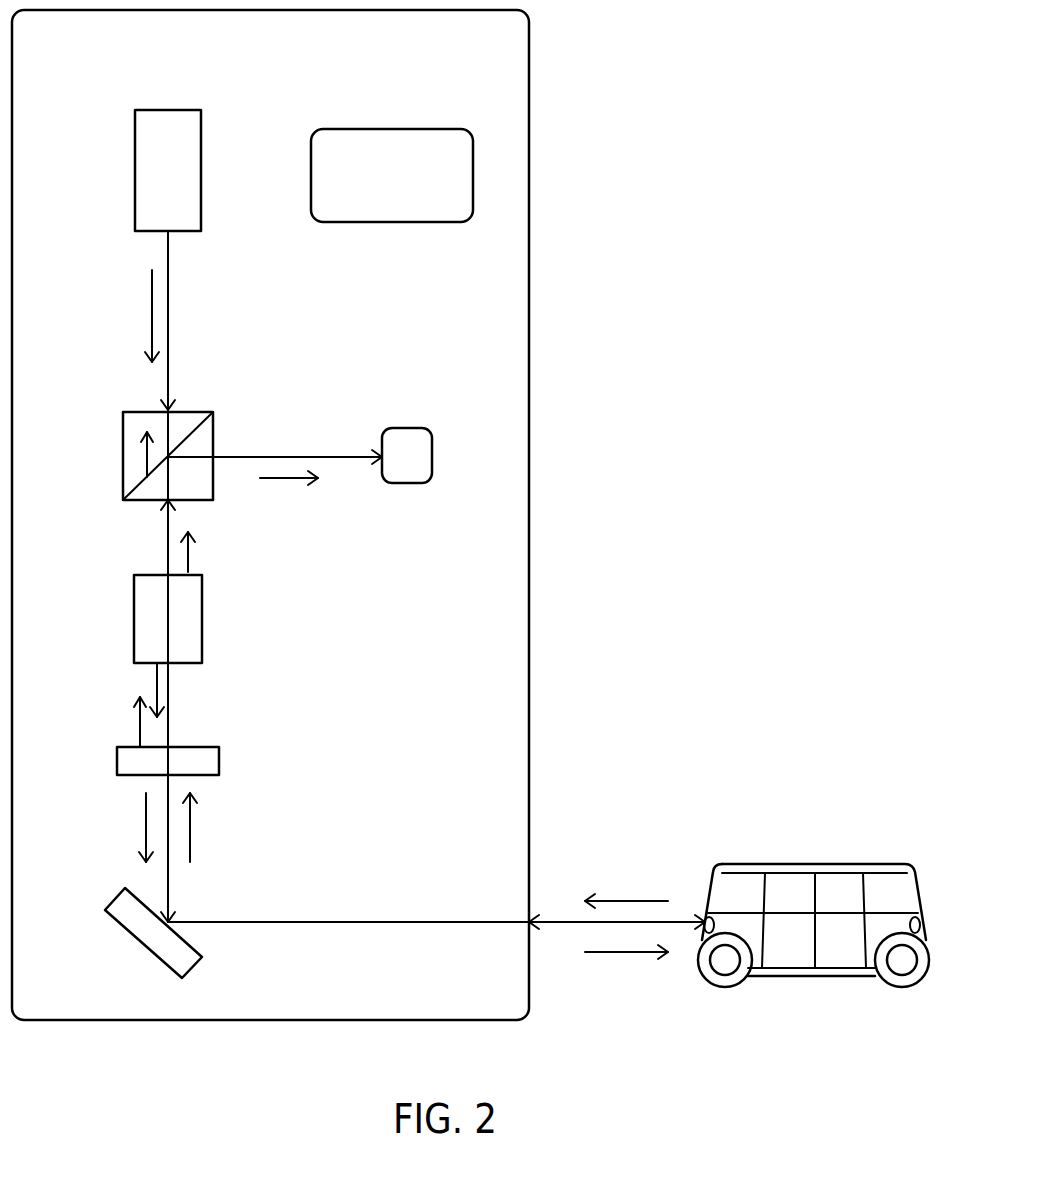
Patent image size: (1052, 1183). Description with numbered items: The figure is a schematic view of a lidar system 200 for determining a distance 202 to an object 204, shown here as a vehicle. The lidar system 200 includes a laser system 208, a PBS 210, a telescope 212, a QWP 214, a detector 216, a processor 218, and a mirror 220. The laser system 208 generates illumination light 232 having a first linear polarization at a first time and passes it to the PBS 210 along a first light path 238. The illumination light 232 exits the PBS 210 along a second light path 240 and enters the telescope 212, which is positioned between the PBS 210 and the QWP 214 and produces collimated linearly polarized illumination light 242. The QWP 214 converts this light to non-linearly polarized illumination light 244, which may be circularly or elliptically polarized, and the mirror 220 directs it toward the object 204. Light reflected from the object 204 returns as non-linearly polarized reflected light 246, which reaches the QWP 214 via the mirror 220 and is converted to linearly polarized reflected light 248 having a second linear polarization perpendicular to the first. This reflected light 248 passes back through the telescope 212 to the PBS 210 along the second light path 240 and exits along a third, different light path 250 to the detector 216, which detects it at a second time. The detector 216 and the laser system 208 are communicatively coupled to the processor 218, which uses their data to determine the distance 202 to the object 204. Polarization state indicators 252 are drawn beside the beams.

The lidar system 200 is at (203, 47).
The distance 202 is at (555, 920).
The object 204 is at (813, 864).
The laser system 208 is at (135, 180).
The PBS 210 is at (205, 412).
The telescope 212 is at (202, 610).
The QWP 214 is at (219, 757).
The detector 216 is at (420, 428).
The processor 218 is at (400, 222).
The mirror 220 is at (195, 962).
The illumination light 232 is at (152, 316).
The first light path 238 is at (168, 298).
The second light path 240 is at (168, 548).
The collimated linearly polarized illumination light 242 is at (157, 680).
The non-linearly polarized illumination light 244 is at (146, 820).
The non-linearly polarized reflected light 246 is at (190, 828).
The linearly polarized reflected light 248 is at (296, 482).
The third light path 250 is at (280, 457).
The polarization state of beam 252 is at (147, 465).